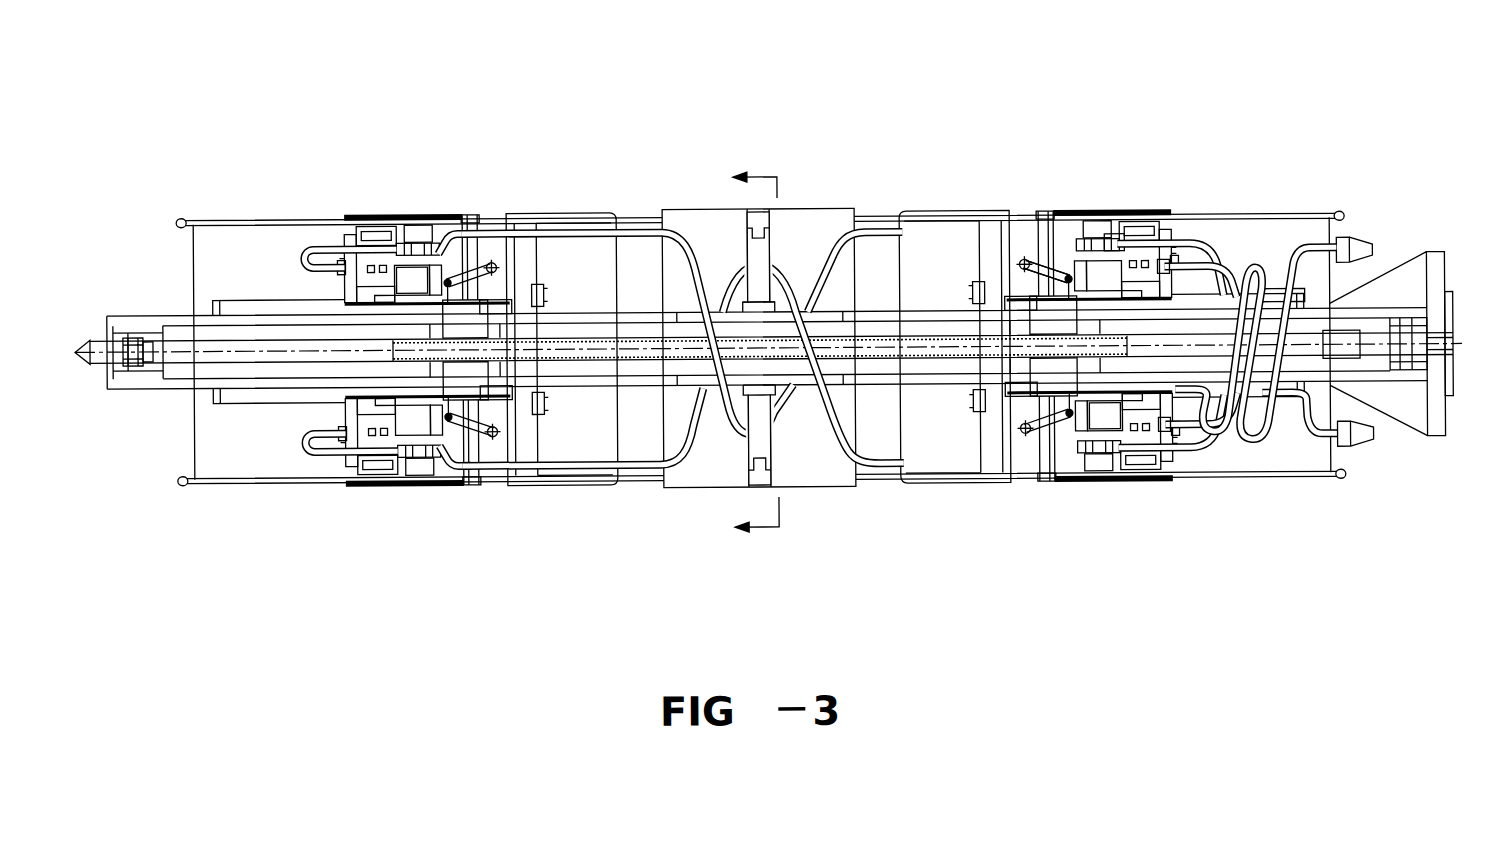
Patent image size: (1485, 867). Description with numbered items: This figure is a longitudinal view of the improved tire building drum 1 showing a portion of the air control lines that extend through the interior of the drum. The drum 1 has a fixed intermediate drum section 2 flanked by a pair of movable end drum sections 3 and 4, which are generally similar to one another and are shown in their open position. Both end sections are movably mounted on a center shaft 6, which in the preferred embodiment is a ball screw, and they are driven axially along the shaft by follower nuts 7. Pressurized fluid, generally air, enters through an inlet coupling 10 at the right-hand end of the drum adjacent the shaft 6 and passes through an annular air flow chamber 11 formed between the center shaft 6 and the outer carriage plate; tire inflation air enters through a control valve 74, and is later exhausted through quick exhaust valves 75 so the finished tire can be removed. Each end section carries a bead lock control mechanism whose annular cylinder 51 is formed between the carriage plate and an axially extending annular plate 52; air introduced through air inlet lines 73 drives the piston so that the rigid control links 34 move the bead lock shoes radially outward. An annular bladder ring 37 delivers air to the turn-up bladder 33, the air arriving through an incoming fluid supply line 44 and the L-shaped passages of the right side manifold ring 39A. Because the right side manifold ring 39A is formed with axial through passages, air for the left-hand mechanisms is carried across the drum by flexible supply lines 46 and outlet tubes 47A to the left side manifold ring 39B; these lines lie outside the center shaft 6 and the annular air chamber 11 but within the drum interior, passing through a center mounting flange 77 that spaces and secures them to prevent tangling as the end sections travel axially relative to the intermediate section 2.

The tire building drum 1 is at (521, 80).
The fixed intermediate drum section 2 is at (824, 213).
The right-hand movable end drum section 3 is at (930, 213).
The left-hand movable end drum section 4 is at (563, 214).
The center shaft 6 is at (873, 360).
The follower nuts 7 is at (1027, 372).
The inlet coupling 10 is at (1415, 322).
The annular air flow chamber 11 is at (947, 372).
The turn-up bladder 33 is at (240, 215).
The control links 34 is at (1043, 232).
The bladder ring 37 is at (1098, 215).
The right side manifold ring 39A is at (1049, 264).
The left side manifold ring 39B is at (456, 250).
The incoming fluid supply line 44 is at (1192, 246).
The incoming fluid supply lines 46 is at (637, 226).
The outlet tubes 47A is at (640, 470).
The annular cylinder 51 is at (413, 268).
The annular plate 52 is at (1103, 432).
The air inlet lines 73 is at (1222, 268).
The control valve 74 is at (1417, 376).
The quick exhaust valves 75 is at (137, 364).
The center mounting flange 77 is at (770, 447).